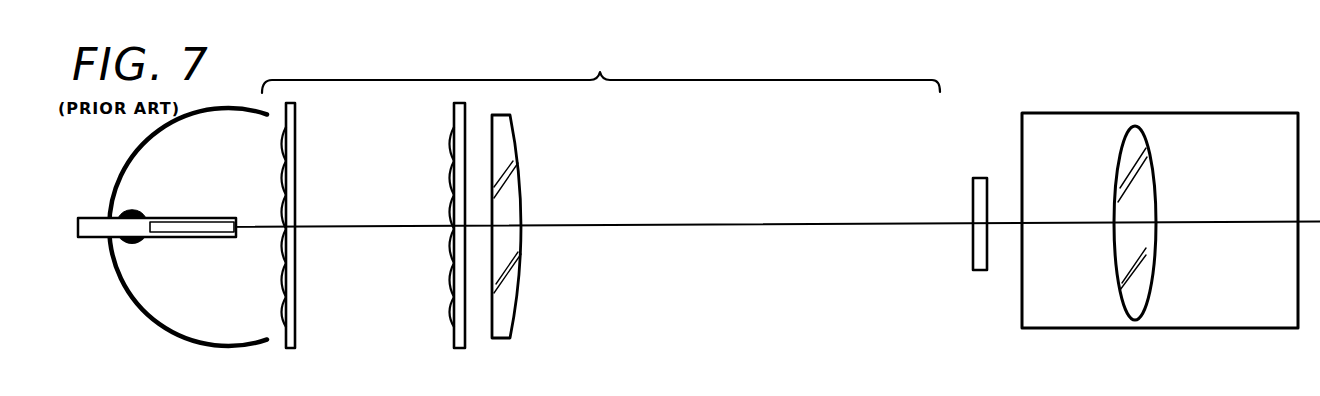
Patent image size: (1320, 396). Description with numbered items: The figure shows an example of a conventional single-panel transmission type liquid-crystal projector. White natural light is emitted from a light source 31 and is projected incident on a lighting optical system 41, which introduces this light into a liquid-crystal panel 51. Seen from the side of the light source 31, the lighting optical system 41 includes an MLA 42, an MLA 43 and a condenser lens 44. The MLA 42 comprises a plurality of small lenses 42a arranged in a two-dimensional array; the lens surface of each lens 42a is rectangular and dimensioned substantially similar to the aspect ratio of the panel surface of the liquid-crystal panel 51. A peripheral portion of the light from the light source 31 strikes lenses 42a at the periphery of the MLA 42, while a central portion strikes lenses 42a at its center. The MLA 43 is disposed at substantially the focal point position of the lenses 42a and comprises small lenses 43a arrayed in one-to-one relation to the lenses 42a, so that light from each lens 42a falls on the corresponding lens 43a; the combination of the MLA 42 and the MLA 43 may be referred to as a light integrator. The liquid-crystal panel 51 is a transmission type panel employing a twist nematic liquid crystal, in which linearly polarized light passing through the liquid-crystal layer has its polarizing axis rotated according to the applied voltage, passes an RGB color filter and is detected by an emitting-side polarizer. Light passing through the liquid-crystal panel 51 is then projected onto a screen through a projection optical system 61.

The light source 31 is at (167, 321).
The lighting optical system 41 is at (601, 70).
The MLA (multi-lens array) 42 is at (296, 338).
The lens 42a is at (296, 177).
The MLA (multi-lens array) 43 is at (466, 103).
The lens 43a is at (453, 158).
The condenser lens 44 is at (512, 114).
The liquid-crystal panel 51 is at (973, 262).
The projection optical system 61 is at (1103, 112).